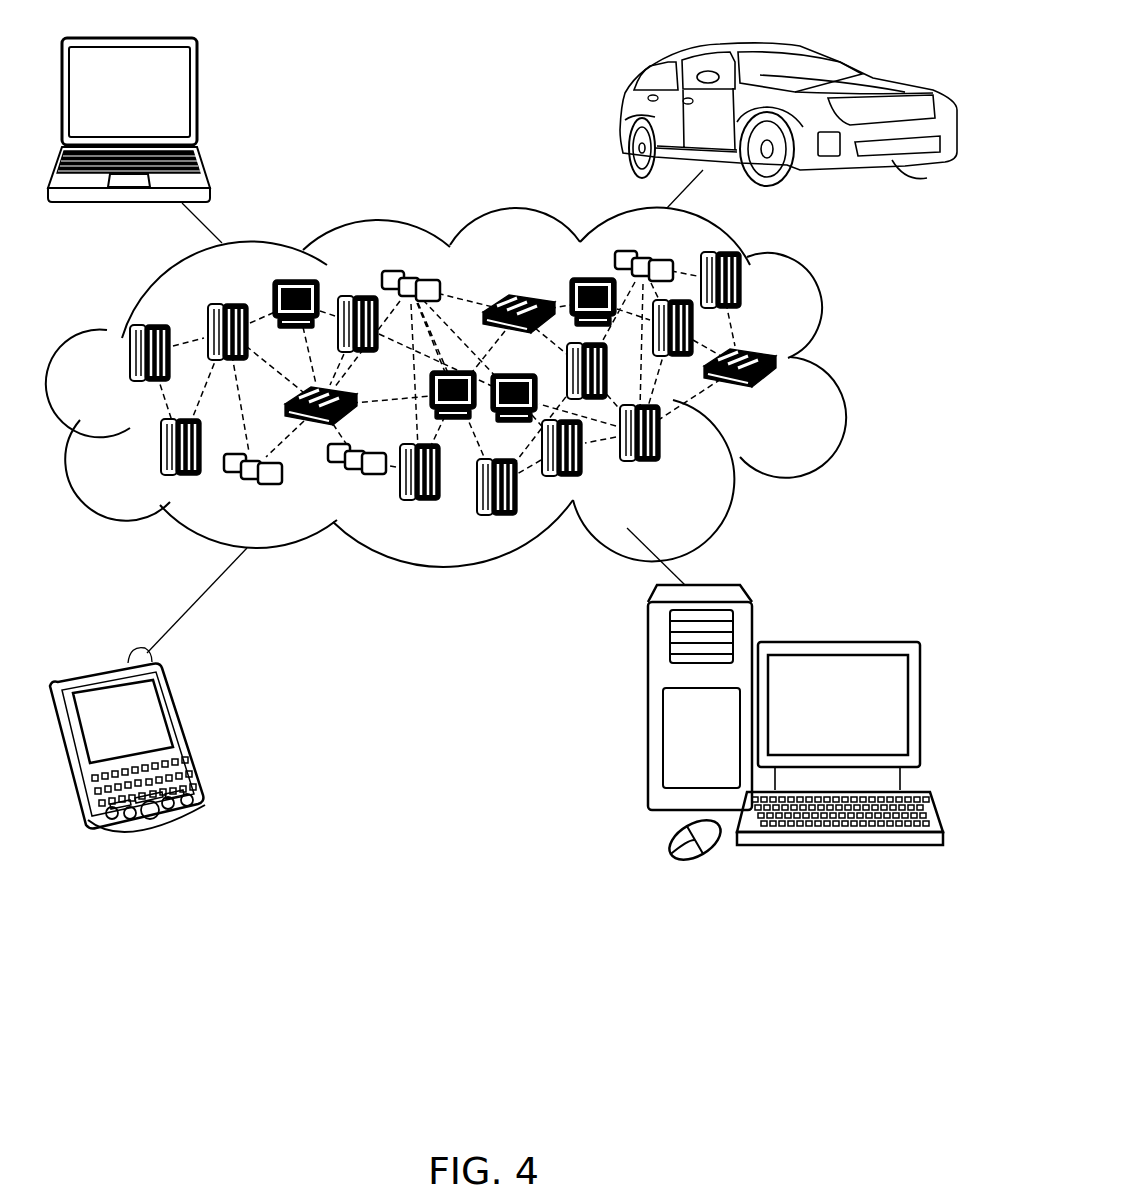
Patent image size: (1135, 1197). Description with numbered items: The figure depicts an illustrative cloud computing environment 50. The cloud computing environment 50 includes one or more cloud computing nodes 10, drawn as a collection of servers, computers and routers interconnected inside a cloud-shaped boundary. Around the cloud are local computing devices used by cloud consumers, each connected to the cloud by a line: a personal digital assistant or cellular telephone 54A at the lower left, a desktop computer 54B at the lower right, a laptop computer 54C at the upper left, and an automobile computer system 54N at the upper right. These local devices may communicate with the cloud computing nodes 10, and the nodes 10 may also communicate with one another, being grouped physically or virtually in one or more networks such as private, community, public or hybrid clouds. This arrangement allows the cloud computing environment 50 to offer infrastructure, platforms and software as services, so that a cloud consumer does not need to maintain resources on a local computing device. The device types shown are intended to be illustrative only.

The laptop computer 54C is at (199, 99).
The automobile computer system 54N is at (622, 112).
The personal digital assistant or cellular telephone 54A is at (190, 730).
The desktop computer 54B is at (835, 642).
The cloud computing environment 50 is at (823, 364).
The cloud computing node 10 is at (780, 392).